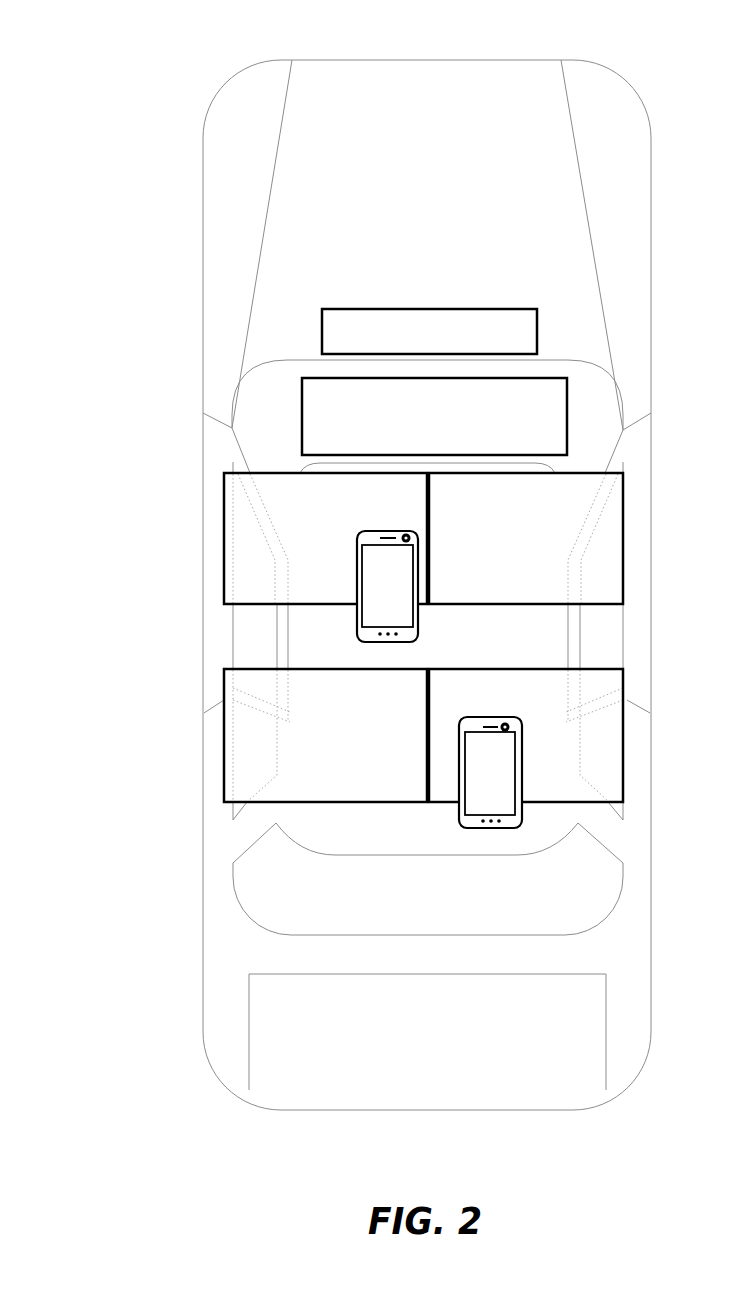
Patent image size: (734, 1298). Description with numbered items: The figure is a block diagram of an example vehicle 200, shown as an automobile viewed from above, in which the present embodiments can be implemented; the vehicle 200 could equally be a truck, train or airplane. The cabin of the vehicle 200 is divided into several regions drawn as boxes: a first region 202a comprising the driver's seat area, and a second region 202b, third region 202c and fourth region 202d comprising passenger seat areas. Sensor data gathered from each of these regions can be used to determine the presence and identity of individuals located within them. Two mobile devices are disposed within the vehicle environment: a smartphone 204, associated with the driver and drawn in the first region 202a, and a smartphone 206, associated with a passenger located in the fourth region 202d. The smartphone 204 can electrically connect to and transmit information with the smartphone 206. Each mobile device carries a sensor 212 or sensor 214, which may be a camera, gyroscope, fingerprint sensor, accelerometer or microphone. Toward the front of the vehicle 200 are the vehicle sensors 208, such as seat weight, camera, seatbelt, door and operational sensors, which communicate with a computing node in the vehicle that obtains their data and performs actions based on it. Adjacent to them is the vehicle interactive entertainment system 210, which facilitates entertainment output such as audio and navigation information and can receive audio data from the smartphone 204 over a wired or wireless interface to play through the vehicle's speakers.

The vehicle 200 is at (112, 79).
The first region 202a is at (393, 514).
The second region 202b is at (593, 514).
The third region 202c is at (393, 710).
The fourth region 202d is at (593, 710).
The smartphone 204 is at (357, 556).
The smartphone 206 is at (522, 786).
The vehicle sensors 208 is at (530, 350).
The vehicle interactive entertainment system 210 is at (557, 444).
The sensor 212 is at (410, 540).
The sensor 214 is at (509, 728).